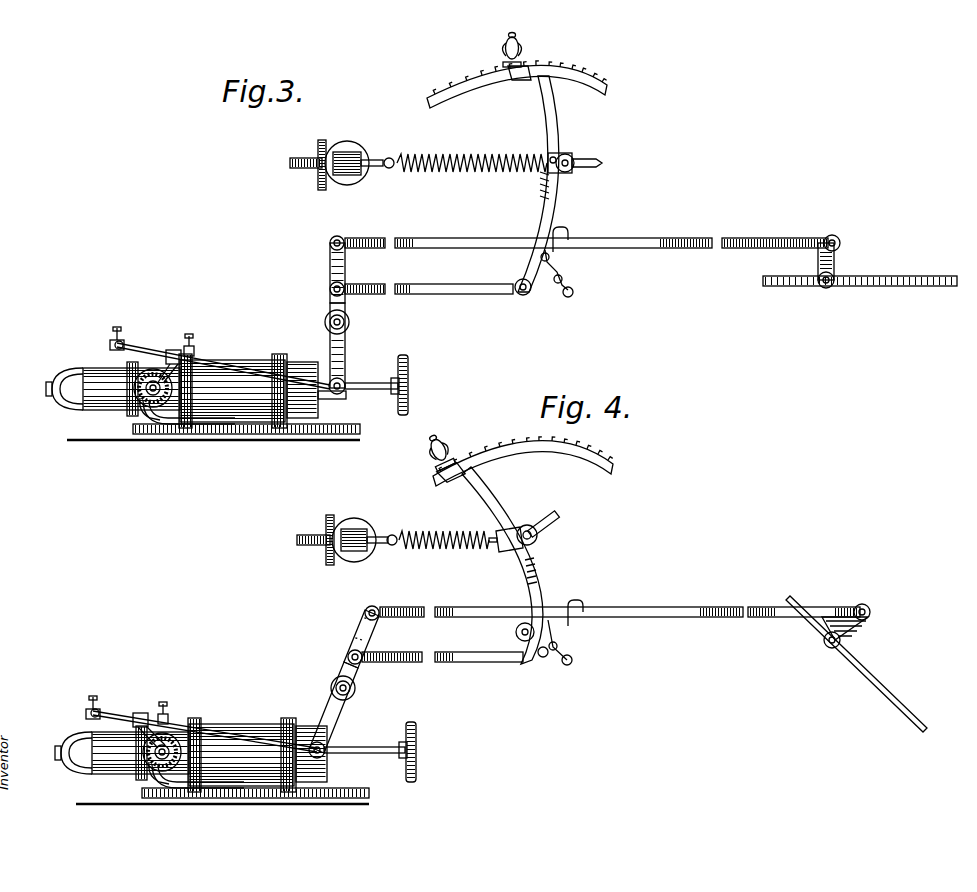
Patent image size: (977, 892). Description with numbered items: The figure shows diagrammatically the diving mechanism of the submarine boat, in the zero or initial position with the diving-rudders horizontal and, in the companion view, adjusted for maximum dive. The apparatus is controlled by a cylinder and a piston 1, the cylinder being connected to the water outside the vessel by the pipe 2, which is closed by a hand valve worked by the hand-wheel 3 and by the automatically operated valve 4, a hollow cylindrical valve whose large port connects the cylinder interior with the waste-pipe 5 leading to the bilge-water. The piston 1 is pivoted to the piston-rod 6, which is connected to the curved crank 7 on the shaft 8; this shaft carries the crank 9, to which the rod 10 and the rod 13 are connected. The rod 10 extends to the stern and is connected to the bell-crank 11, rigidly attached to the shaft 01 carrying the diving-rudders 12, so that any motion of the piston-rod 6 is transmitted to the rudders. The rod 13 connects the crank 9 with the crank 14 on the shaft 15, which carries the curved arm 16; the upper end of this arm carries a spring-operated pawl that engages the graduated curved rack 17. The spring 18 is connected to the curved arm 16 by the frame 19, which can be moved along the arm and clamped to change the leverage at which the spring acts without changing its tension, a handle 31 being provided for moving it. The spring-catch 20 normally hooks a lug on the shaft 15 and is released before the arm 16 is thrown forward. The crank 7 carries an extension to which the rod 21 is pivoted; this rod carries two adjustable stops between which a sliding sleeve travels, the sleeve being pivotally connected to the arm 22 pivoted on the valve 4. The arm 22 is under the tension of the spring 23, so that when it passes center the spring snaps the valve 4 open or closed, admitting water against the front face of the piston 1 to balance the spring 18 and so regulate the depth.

In FIG. 3, the piston 1 is at (346, 373).
In FIG. 4, the piston 1 is at (331, 730).
In FIG. 3, the pipe 2 is at (90, 384).
In FIG. 3, the hand-wheel 3 is at (411, 393).
In FIG. 4, the hand-wheel 3 is at (419, 731).
In FIG. 3, the valve 4 is at (134, 402).
In FIG. 3, the waste-pipe 5 is at (183, 435).
In FIG. 4, the waste-pipe 5 is at (222, 808).
In FIG. 3, the piston-rod 6 is at (343, 398).
In FIG. 3, the crank 7 is at (305, 358).
In FIG. 3, the shaft 8 is at (330, 318).
In FIG. 4, the shaft 8 is at (332, 685).
In FIG. 3, the crank 9 is at (330, 266).
In FIG. 4, the crank 9 is at (362, 636).
In FIG. 3, the rod 10 is at (418, 240).
In FIG. 4, the rod 10 is at (695, 607).
In FIG. 3, the bell-crank 11 is at (837, 259).
In FIG. 4, the bell-crank 11 is at (828, 607).
In FIG. 3, the diving-rudders 12 is at (343, 158).
In FIG. 4, the diving-rudders 12 is at (371, 534).
In FIG. 3, the rod 13 is at (386, 160).
In FIG. 4, the rod 13 is at (467, 656).
In FIG. 3, the crank 14 is at (292, 160).
In FIG. 4, the crank 14 is at (308, 548).
In FIG. 3, the shaft 15 is at (323, 152).
In FIG. 4, the shaft 15 is at (327, 530).
In FIG. 3, the curved arm 16 is at (505, 53).
In FIG. 4, the curved arm 16 is at (436, 462).
In FIG. 3, the curved rack 17 is at (465, 85).
In FIG. 4, the curved rack 17 is at (520, 447).
In FIG. 3, the spring 18 is at (440, 152).
In FIG. 4, the spring 18 is at (443, 548).
In FIG. 3, the frame 19 is at (563, 155).
In FIG. 4, the frame 19 is at (540, 537).
In FIG. 3, the spring-catch 20 is at (557, 265).
In FIG. 4, the spring-catch 20 is at (543, 658).
In FIG. 3, the rod 21 is at (224, 366).
In FIG. 4, the rod 21 is at (205, 731).
In FIG. 3, the arm 22 is at (521, 82).
In FIG. 4, the arm 22 is at (150, 754).
In FIG. 3, the spring 23 is at (151, 428).
In FIG. 4, the spring 23 is at (137, 795).
In FIG. 3, the handle 31 is at (599, 162).
In FIG. 4, the handle 31 is at (548, 514).
In FIG. 3, the shaft 01 is at (823, 289).
In FIG. 4, the shaft 01 is at (827, 651).